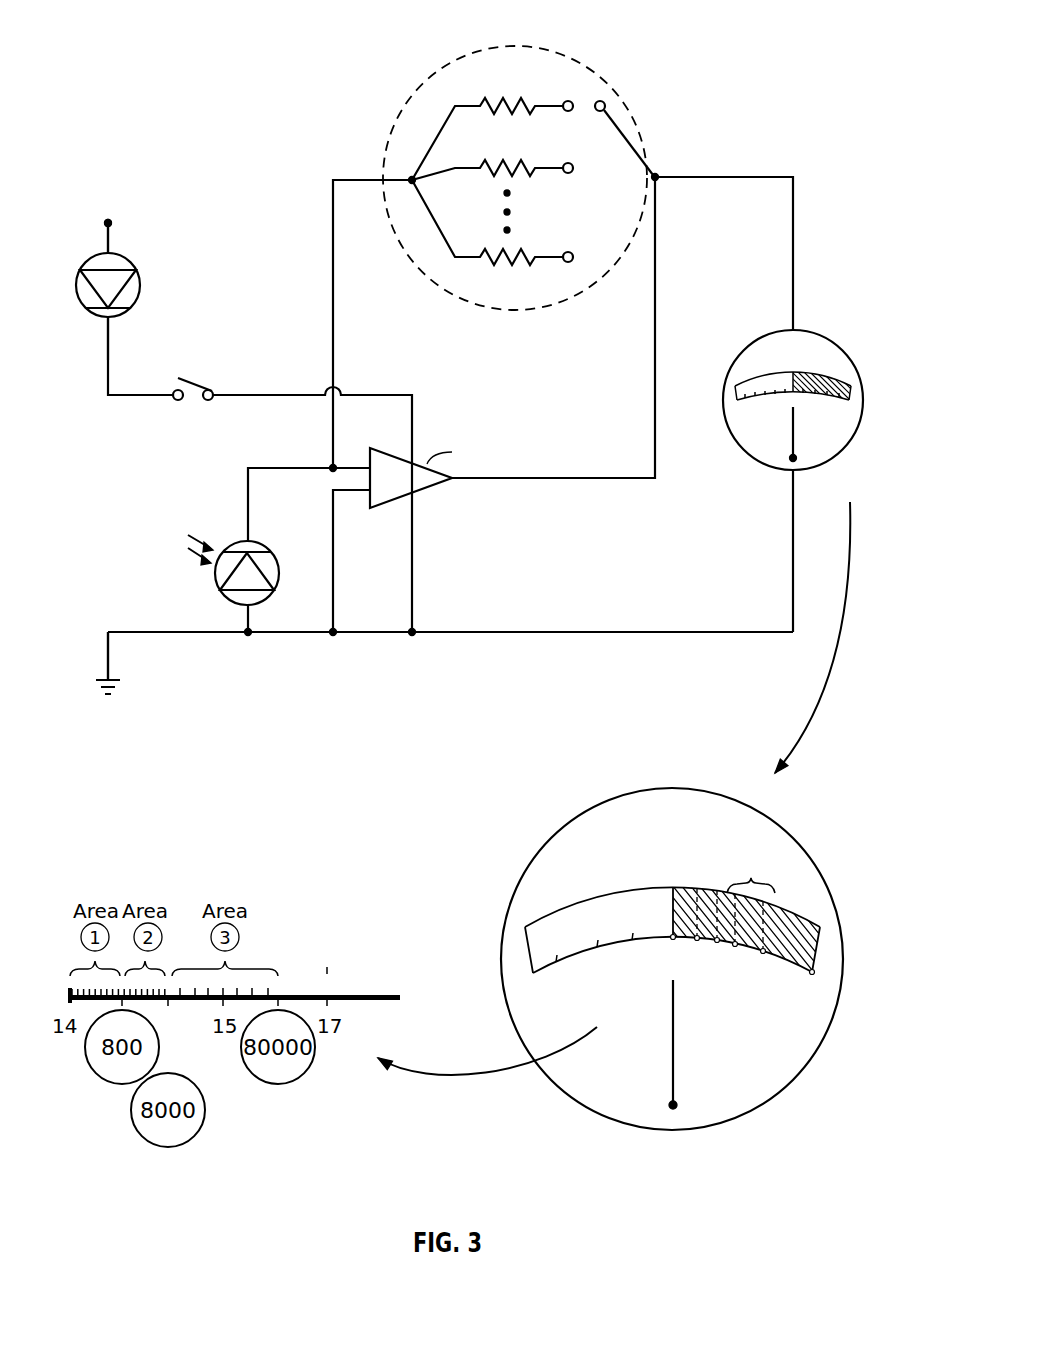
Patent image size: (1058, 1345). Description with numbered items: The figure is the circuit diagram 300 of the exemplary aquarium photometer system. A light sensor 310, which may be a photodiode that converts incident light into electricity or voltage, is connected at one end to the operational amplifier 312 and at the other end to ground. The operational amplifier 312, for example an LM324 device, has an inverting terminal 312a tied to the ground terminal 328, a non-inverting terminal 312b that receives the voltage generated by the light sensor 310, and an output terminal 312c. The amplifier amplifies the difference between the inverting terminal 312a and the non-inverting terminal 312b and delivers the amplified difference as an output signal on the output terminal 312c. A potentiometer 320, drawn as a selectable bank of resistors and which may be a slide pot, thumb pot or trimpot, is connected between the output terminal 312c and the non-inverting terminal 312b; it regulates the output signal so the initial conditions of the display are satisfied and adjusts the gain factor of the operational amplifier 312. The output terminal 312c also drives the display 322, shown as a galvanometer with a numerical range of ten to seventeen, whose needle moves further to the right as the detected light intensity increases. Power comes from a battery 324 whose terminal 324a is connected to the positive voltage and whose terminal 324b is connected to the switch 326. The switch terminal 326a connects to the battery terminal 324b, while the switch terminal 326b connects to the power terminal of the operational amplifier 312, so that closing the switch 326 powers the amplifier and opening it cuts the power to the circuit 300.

The circuit diagram 300 is at (783, 50).
The light sensor 310 is at (262, 548).
The operational amplifier 312 is at (428, 492).
The inverting terminal 312a is at (352, 492).
The non-inverting terminal 312b is at (352, 467).
The output terminal 312c is at (553, 478).
The potentiometer 320 is at (600, 75).
The display 322 is at (818, 333).
The battery 324 is at (127, 262).
The battery terminal 324a is at (110, 240).
The battery terminal 324b is at (110, 338).
The switch 326 is at (178, 403).
The switch terminal 326a is at (115, 398).
The switch terminal 326b is at (237, 398).
The ground terminal 328 is at (178, 633).